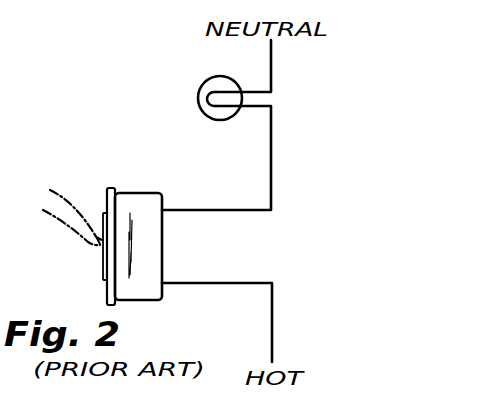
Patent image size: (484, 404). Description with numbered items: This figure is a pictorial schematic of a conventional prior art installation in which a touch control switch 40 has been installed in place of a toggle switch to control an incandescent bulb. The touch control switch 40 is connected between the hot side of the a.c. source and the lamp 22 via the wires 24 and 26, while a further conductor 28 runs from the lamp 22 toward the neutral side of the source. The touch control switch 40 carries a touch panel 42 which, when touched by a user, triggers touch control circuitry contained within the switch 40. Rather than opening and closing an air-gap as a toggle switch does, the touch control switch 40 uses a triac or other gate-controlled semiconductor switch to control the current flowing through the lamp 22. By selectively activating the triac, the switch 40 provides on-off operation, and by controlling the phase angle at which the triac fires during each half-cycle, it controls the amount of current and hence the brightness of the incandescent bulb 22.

The lamp 22 is at (199, 105).
The wire 24 is at (273, 291).
The wire 26 is at (273, 183).
The neutral conductor 28 is at (273, 63).
The touch control switch 40 is at (153, 245).
The touch panel 42 is at (103, 262).